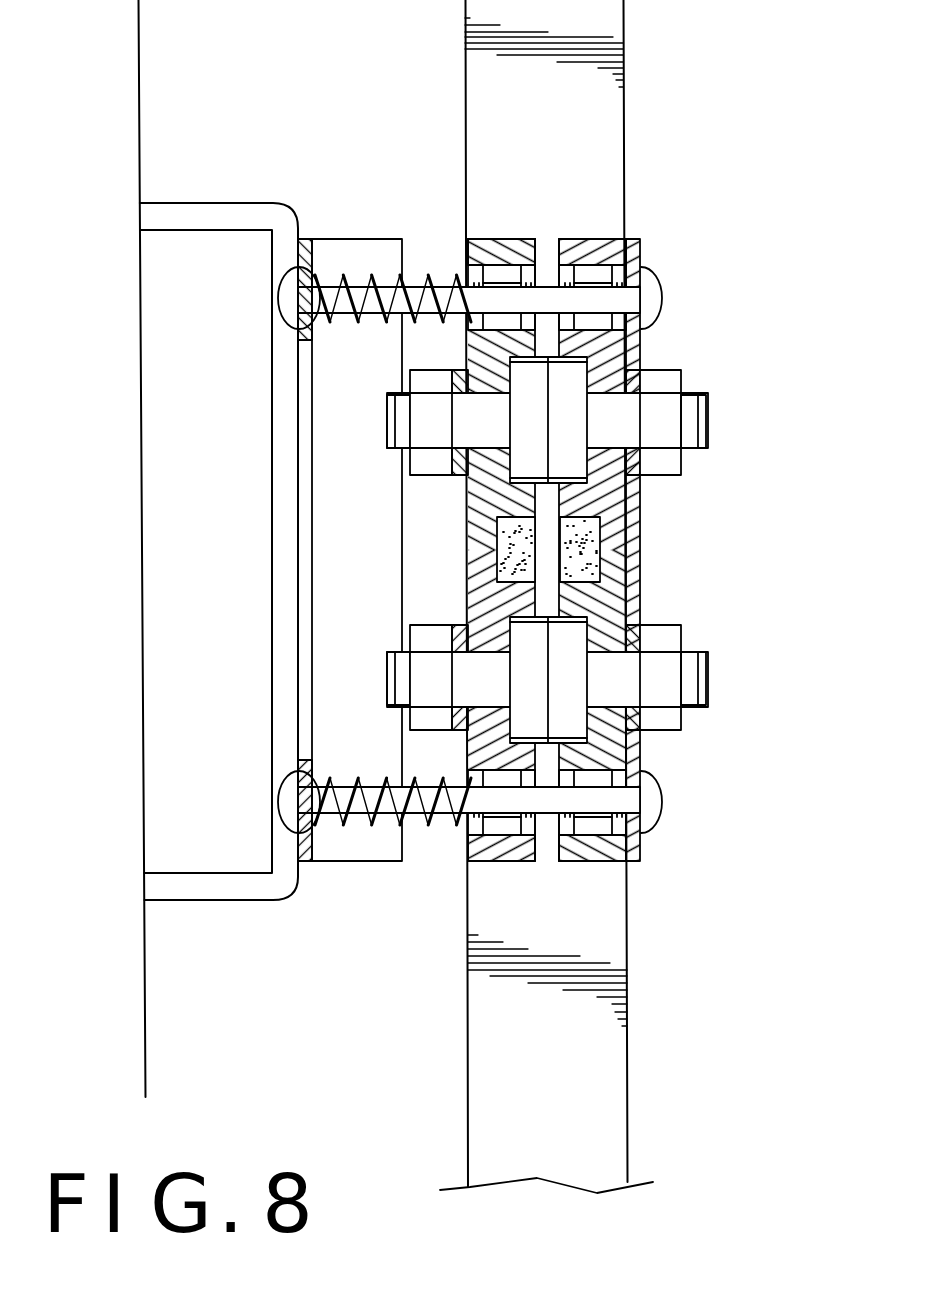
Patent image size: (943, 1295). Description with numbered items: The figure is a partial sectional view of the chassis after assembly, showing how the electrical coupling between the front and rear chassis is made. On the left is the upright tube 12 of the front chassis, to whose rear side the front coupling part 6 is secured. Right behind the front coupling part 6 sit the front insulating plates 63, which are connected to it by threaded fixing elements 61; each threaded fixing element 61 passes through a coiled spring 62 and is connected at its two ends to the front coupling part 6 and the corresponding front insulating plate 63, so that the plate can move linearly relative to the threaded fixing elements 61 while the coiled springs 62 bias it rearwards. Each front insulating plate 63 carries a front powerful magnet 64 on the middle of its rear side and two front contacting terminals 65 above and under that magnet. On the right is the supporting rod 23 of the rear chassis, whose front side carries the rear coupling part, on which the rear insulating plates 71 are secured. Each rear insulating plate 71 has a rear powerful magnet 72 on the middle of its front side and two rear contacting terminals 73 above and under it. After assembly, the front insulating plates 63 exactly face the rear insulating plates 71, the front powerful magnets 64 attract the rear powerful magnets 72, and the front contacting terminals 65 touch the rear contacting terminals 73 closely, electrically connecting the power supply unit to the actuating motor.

The upright tube 12 is at (86, 118).
The supporting rod 23 is at (565, 128).
The front coupling part 6 is at (338, 239).
The threaded fixing elements 61 is at (286, 285).
The coiled spring 62 is at (430, 268).
The front insulating plates 63 is at (497, 239).
The front powerful magnet 64 is at (497, 555).
The front contacting terminals 65 is at (528, 448).
The rear insulating plates 71 is at (590, 240).
The rear powerful magnet 72 is at (583, 553).
The rear contacting terminals 73 is at (566, 385).